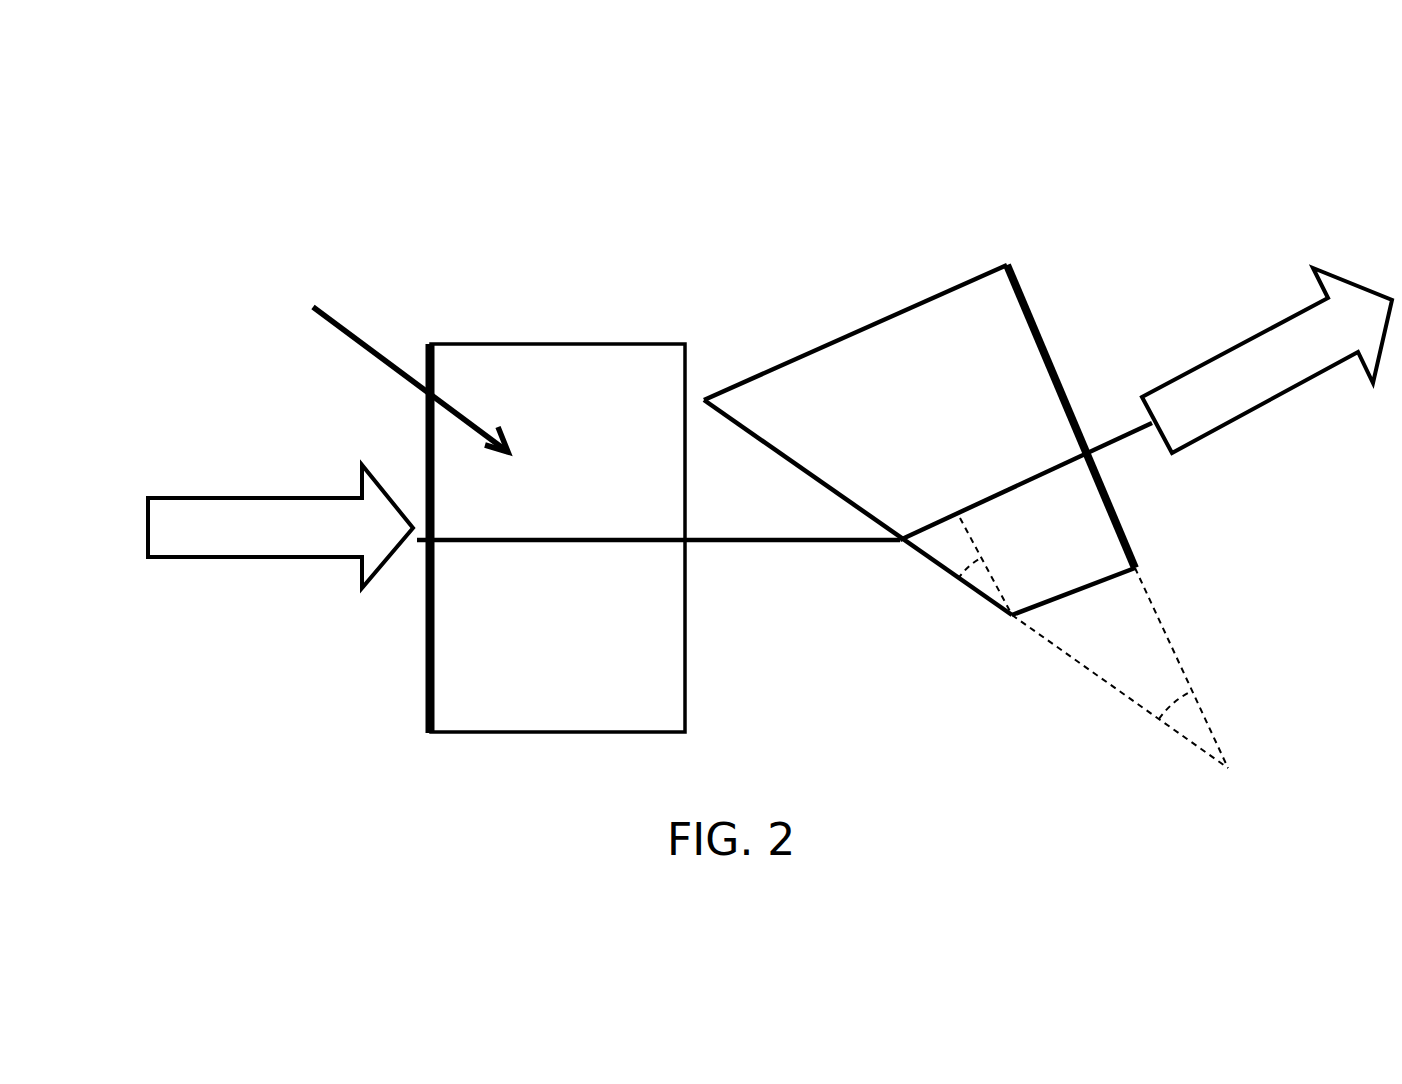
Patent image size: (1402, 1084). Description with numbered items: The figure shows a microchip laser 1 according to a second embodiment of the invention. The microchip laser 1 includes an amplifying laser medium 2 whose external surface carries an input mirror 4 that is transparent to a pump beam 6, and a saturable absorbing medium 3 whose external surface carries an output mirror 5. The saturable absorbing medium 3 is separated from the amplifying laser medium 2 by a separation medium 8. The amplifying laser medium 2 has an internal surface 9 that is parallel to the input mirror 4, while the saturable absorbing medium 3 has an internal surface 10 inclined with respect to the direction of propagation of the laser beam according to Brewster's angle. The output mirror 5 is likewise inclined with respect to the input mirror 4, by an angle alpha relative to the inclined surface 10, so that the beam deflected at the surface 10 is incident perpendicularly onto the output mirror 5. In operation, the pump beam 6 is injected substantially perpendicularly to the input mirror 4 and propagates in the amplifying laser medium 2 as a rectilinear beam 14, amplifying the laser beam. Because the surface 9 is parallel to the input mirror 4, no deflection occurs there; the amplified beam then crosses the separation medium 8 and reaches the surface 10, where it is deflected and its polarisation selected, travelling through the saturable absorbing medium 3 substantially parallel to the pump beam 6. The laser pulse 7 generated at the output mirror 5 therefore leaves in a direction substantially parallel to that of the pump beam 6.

The microchip laser 1 is at (446, 249).
The amplifying laser medium 2 is at (386, 347).
The saturable absorbing medium 3 is at (944, 314).
The input mirror 4 is at (427, 652).
The output mirror 5 is at (1118, 515).
The pump beam 6 is at (147, 553).
The laser pulse 7 is at (1137, 323).
The separation medium 8 is at (728, 463).
The internal surface 9 is at (687, 695).
The internal surface 10 is at (948, 583).
The rectilinear beam 14 is at (532, 544).